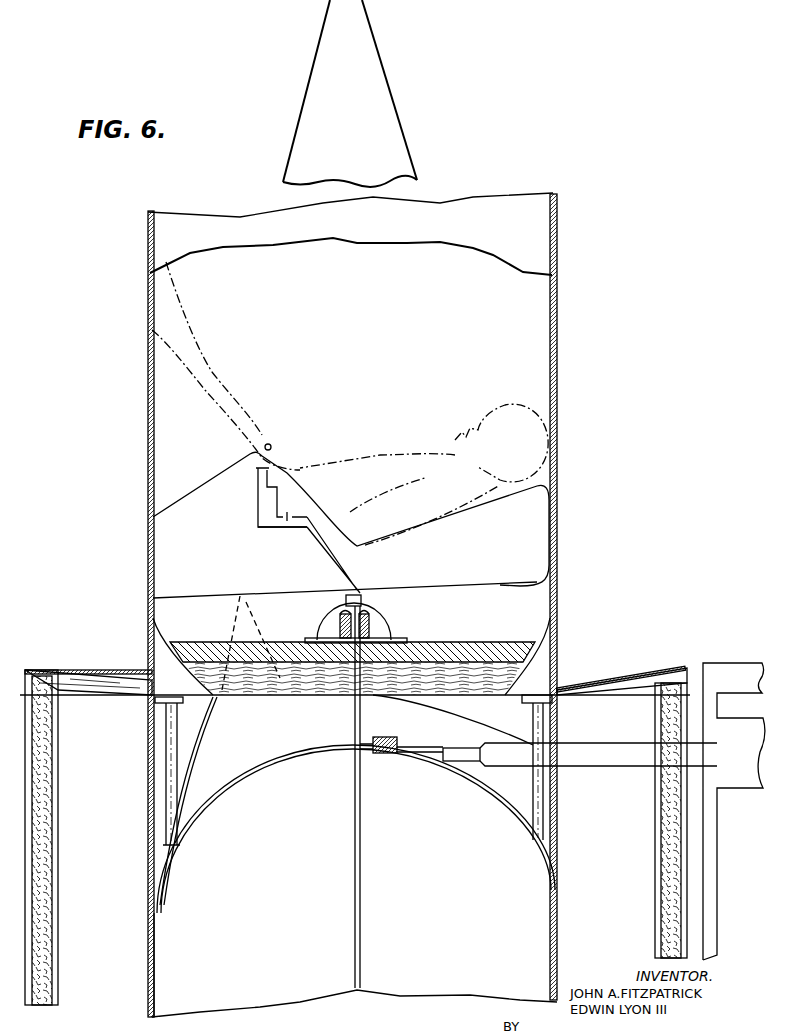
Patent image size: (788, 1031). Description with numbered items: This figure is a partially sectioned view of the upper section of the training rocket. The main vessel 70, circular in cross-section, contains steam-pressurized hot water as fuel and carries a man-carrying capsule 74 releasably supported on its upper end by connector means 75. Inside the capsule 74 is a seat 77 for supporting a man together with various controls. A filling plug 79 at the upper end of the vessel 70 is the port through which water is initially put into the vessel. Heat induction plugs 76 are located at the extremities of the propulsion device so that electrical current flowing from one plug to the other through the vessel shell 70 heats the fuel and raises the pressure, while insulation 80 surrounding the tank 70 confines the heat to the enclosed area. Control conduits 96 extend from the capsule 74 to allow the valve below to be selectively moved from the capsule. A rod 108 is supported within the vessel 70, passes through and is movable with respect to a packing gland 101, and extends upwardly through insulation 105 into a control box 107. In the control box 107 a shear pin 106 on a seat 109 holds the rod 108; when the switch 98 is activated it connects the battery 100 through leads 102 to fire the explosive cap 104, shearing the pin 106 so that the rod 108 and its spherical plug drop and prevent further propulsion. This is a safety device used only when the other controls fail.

The main vessel 70 is at (160, 946).
The man-carrying capsule 74 is at (557, 411).
The connector means 75 is at (540, 734).
The heat induction plugs 76 is at (588, 767).
The seat 77 is at (207, 479).
The filling plug 79 is at (356, 813).
The insulation 80 is at (88, 673).
The control conduits 96 is at (256, 632).
The switch 98 is at (258, 470).
The battery 100 is at (278, 528).
The packing gland 101 is at (350, 750).
The leads 102 is at (333, 552).
The explosive cap 104 is at (364, 599).
The insulation 105 is at (257, 692).
The shear pin 106 is at (340, 606).
The control box 107 is at (395, 639).
The rod 108 is at (360, 927).
The seat 109 is at (372, 626).